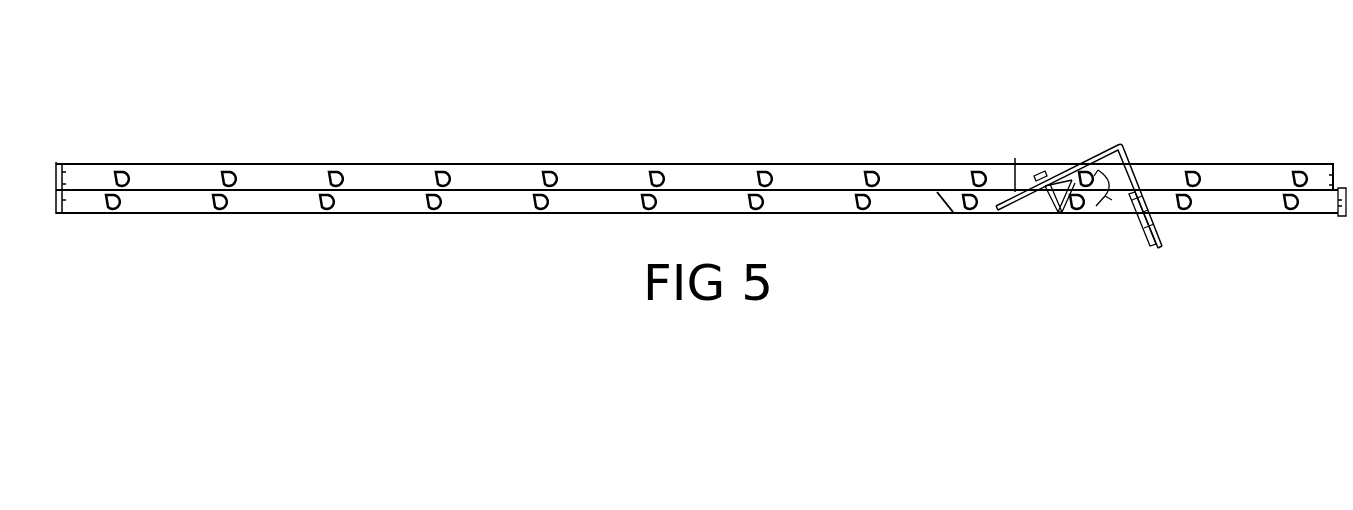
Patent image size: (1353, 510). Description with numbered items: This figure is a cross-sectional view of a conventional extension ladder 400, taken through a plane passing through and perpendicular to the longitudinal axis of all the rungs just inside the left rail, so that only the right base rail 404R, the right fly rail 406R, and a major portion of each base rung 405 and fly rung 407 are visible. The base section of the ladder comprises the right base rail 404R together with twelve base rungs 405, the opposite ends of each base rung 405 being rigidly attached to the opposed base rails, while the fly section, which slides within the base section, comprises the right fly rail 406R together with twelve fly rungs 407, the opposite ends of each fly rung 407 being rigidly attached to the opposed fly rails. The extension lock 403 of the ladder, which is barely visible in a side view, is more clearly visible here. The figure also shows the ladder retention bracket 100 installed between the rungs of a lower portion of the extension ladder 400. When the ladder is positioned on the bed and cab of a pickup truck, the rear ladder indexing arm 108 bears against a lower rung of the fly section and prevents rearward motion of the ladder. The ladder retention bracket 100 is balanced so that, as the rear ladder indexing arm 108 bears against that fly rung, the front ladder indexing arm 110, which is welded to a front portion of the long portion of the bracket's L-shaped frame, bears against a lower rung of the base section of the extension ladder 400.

The extension ladder 400 is at (701, 170).
The right base rail 404R is at (378, 200).
The right fly rail 406R is at (606, 175).
The base rungs 405 is at (543, 222).
The fly rungs 407 is at (870, 160).
The ladder retention bracket 100 is at (1071, 186).
The front ladder indexing arm 110 is at (943, 222).
The extension lock 403 is at (1058, 215).
The rear ladder indexing arm 108 is at (1126, 208).